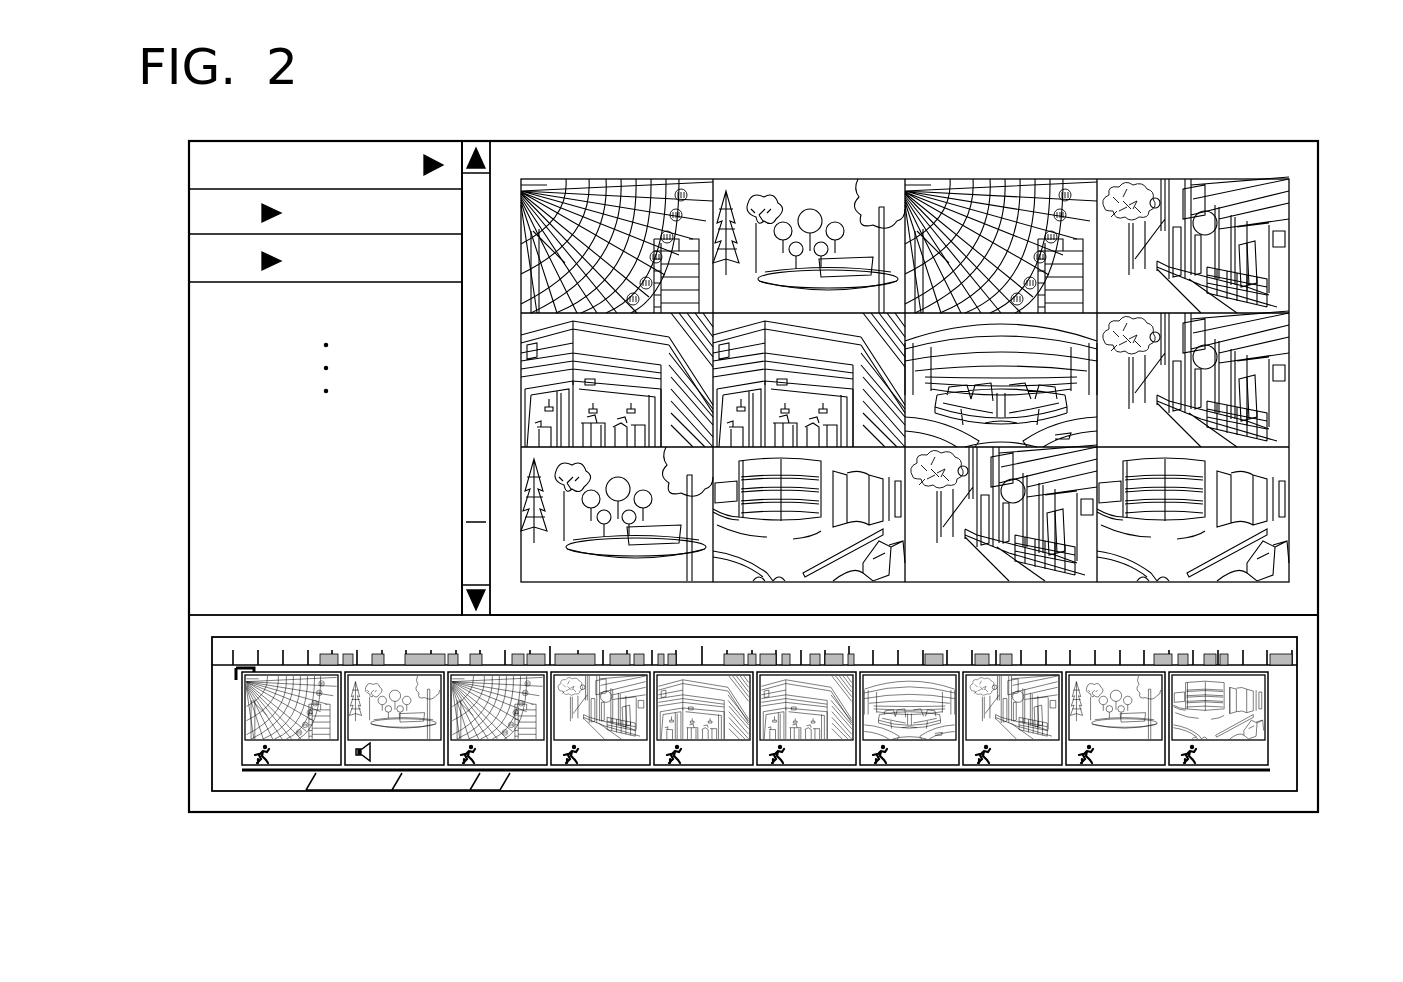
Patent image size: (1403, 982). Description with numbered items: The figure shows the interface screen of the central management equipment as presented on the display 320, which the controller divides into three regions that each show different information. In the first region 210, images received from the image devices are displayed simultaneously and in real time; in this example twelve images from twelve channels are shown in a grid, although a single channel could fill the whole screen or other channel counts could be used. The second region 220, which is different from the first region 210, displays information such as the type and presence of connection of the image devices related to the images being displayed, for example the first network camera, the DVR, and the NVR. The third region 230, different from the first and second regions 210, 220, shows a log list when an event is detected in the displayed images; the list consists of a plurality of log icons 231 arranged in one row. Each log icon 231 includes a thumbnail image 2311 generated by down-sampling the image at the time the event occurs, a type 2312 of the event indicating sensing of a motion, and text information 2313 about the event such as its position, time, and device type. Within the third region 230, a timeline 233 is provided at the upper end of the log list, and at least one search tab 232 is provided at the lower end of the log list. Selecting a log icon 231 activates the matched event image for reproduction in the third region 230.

The display 320 is at (910, 128).
The first region 210 is at (1302, 399).
The second region 220 is at (208, 492).
The third region 230 is at (198, 636).
The log icon 231 is at (215, 732).
The thumbnail image 2311 is at (243, 706).
The type of the event 2312 is at (252, 750).
The text information 2313 is at (246, 762).
The search tab 232 is at (268, 790).
The timeline 233 is at (1287, 645).